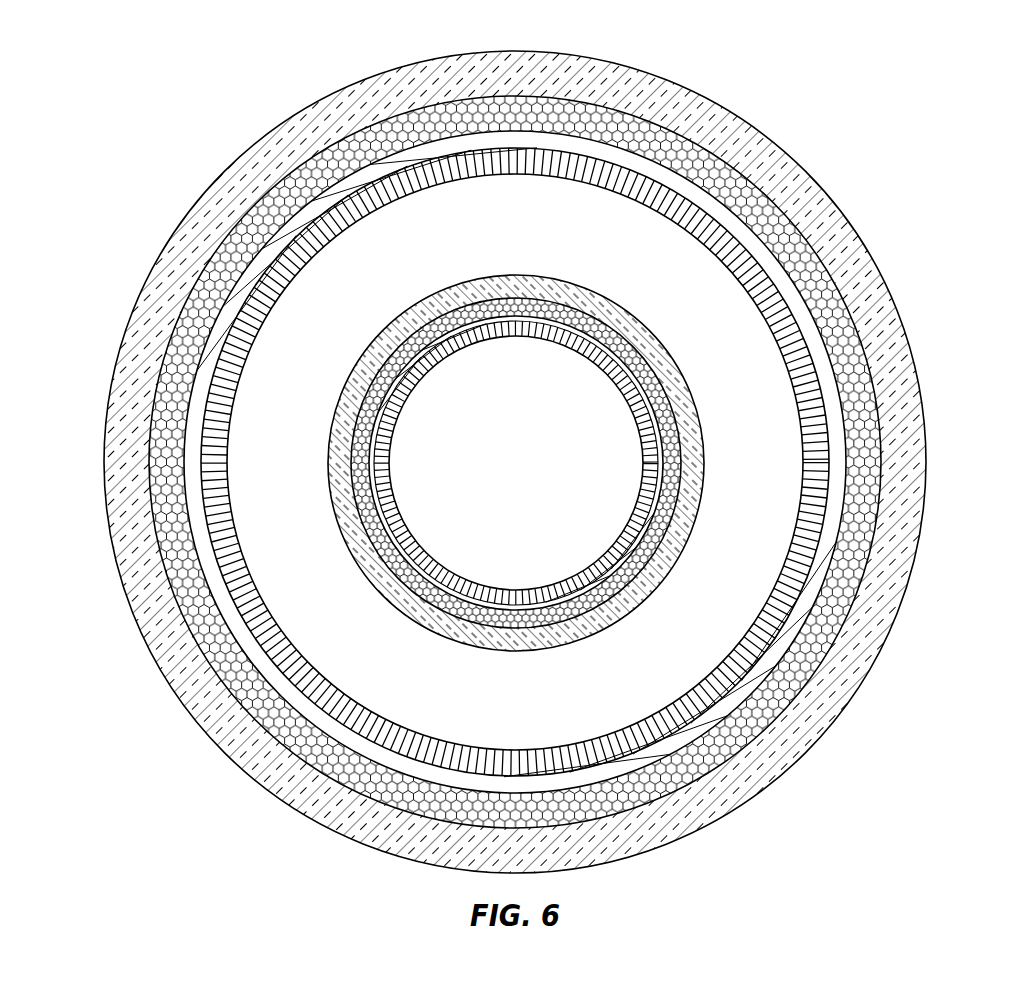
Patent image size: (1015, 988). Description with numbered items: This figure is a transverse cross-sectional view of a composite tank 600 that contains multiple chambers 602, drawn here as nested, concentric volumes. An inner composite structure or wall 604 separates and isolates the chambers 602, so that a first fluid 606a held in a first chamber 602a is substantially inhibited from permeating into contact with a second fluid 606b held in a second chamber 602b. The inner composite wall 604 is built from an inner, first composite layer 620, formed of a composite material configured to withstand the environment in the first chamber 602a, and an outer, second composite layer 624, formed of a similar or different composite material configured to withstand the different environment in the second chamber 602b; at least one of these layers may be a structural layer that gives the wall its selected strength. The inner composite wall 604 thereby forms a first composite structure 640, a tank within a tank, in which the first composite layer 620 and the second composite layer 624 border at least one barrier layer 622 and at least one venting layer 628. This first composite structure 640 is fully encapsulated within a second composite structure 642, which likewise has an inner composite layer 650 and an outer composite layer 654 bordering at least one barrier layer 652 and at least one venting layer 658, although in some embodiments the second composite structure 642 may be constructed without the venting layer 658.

The composite tank 600 is at (913, 57).
The chambers 602 is at (527, 358).
The first chamber 602a is at (360, 563).
The second chamber 602b is at (718, 595).
The inner composite wall 604 is at (233, 713).
The first fluid 606a is at (382, 600).
The second fluid 606b is at (673, 653).
The first composite layer 620 is at (388, 405).
The barrier layer 622 is at (373, 440).
The second composite layer 624 is at (453, 537).
The venting layer 628 is at (437, 500).
The first composite structure 640 is at (700, 395).
The second composite structure 642 is at (862, 220).
The inner composite layer 650 is at (818, 416).
The barrier layer 652 is at (840, 452).
The outer composite layer 654 is at (893, 573).
The venting layer 658 is at (882, 505).